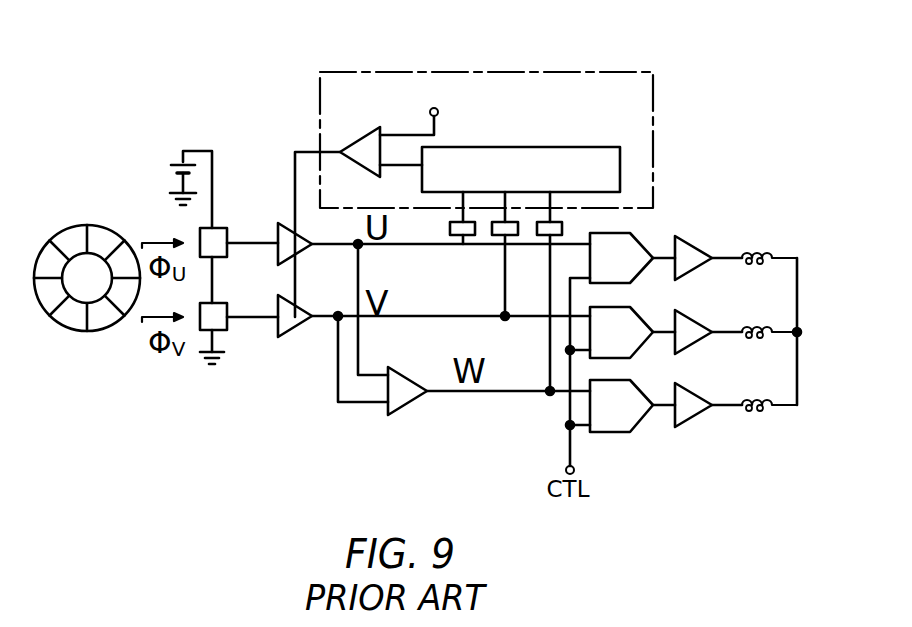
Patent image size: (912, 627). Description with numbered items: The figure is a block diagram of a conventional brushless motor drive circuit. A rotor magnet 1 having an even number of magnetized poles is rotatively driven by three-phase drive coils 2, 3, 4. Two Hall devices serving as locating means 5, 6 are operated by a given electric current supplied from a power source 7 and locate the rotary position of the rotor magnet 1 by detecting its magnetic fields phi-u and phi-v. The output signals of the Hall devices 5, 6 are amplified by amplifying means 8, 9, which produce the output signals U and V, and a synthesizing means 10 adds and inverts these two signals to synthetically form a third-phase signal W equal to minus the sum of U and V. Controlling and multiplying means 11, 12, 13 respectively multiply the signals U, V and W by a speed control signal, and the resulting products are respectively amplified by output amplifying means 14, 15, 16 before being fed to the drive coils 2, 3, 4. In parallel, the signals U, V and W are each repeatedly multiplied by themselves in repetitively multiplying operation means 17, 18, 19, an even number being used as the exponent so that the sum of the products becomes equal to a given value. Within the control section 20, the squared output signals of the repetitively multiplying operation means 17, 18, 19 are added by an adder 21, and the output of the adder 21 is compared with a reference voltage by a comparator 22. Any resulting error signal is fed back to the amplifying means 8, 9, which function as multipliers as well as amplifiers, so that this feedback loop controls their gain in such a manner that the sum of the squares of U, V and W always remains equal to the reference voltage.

The rotor magnet 1 is at (87, 309).
The drive coil 2 is at (760, 252).
The drive coil 3 is at (760, 325).
The drive coil 4 is at (760, 396).
The locating means 5 is at (227, 233).
The locating means 6 is at (227, 309).
The power source 7 is at (172, 167).
The amplifying means 8 is at (298, 234).
The amplifying means 9 is at (298, 306).
The synthesizing means 10 is at (410, 378).
The controlling and multiplying means 11 is at (634, 233).
The controlling and multiplying means 12 is at (641, 319).
The controlling and multiplying means 13 is at (641, 392).
The output amplifying means 14 is at (697, 249).
The output amplifying means 15 is at (697, 323).
The output amplifying means 16 is at (697, 396).
The repetitively multiplying operation means 17 is at (449, 237).
The repetitively multiplying operation means 18 is at (491, 237).
The repetitively multiplying operation means 19 is at (538, 237).
The control section 20 is at (567, 72).
The adder 21 is at (495, 147).
The comparator 22 is at (349, 145).